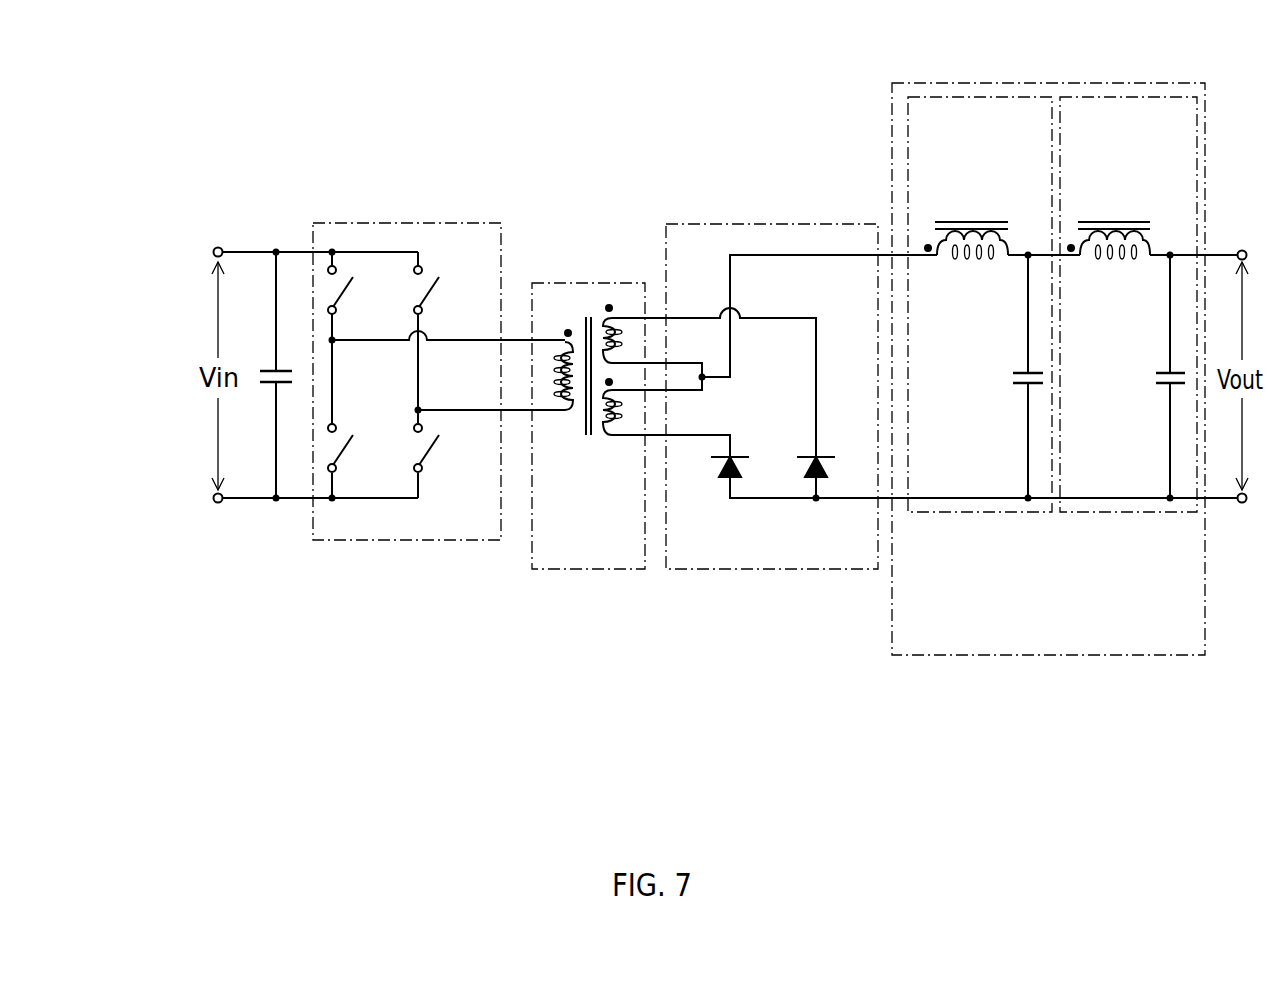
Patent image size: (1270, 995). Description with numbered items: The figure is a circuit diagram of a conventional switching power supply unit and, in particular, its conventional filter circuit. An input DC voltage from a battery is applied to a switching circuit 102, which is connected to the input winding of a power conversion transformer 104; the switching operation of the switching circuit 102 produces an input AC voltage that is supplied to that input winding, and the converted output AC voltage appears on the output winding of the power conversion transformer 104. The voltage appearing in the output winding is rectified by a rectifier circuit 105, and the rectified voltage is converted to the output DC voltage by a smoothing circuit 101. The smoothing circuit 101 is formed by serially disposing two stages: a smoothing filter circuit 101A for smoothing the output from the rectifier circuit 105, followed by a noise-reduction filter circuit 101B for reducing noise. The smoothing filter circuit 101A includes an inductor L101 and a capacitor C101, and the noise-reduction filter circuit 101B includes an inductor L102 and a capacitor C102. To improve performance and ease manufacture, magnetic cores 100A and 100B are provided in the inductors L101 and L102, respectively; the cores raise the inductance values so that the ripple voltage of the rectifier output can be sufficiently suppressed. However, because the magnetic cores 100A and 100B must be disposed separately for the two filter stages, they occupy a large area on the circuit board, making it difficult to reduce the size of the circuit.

The smoothing circuit 101 is at (1050, 76).
The smoothing filter circuit 101A is at (984, 336).
The noise-reduction filter circuit 101B is at (1149, 336).
The magnetic core 100A is at (967, 212).
The magnetic core 100B is at (1109, 212).
The switching circuit 102 is at (408, 212).
The power conversion transformer 104 is at (587, 274).
The rectifier circuit 105 is at (771, 214).
The inductor L101 is at (973, 272).
The inductor L102 is at (1116, 272).
The capacitor C101 is at (1012, 388).
The capacitor C102 is at (1155, 388).